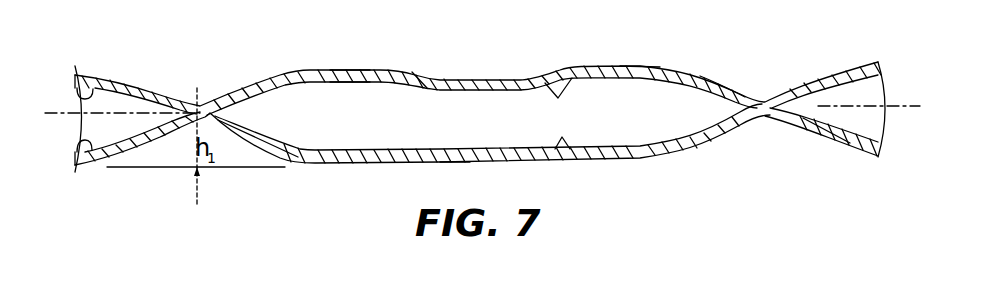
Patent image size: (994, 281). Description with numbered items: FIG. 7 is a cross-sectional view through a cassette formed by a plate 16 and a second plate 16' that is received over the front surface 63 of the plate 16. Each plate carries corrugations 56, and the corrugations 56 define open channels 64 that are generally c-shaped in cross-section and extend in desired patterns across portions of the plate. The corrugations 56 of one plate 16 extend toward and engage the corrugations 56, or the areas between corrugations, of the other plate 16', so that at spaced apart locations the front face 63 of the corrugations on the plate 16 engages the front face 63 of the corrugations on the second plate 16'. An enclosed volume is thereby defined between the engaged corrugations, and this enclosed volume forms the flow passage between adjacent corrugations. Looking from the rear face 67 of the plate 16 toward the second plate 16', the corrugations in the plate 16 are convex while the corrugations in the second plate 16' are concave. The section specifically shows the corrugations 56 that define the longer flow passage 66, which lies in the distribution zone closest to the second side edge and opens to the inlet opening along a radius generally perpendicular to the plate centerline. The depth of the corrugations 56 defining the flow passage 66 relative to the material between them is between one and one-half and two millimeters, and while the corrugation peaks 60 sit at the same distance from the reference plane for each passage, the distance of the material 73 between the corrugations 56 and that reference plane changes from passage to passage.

The plate 16 is at (480, 146).
The second plate 16' is at (728, 55).
The corrugations 56 is at (412, 72).
The corrugation peaks 60 is at (362, 68).
The front surface 63 is at (78, 92).
The open channels 64 is at (117, 100).
The flow passage 66 is at (640, 80).
The rear face 67 is at (90, 73).
The material between the corrugations 73 is at (210, 100).